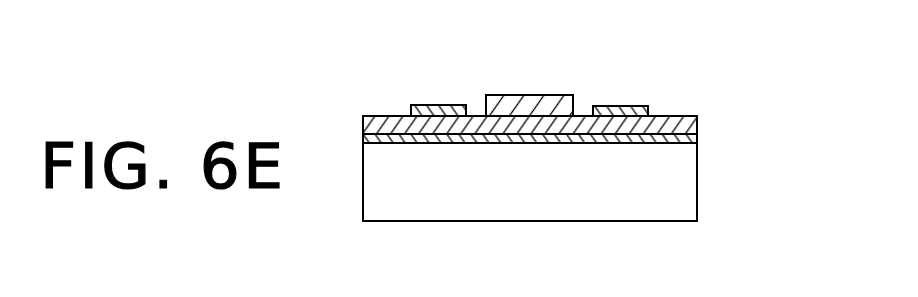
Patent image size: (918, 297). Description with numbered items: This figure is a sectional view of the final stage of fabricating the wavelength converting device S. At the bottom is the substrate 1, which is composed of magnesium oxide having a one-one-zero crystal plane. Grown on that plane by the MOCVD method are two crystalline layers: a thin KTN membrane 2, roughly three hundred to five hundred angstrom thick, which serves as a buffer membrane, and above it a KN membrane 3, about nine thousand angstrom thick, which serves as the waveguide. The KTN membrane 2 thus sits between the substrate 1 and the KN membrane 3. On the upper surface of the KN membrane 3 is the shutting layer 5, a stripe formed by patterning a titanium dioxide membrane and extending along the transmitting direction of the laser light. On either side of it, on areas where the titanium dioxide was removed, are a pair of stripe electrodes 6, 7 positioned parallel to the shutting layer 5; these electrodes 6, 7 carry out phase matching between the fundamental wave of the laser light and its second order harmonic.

The substrate 1 is at (695, 188).
The KTN membrane 2 is at (697, 139).
The KN membrane 3 is at (697, 125).
The shutting layer 5 is at (537, 95).
The electrode 6 is at (623, 106).
The electrode 7 is at (443, 105).
The wavelength converting device S is at (680, 90).